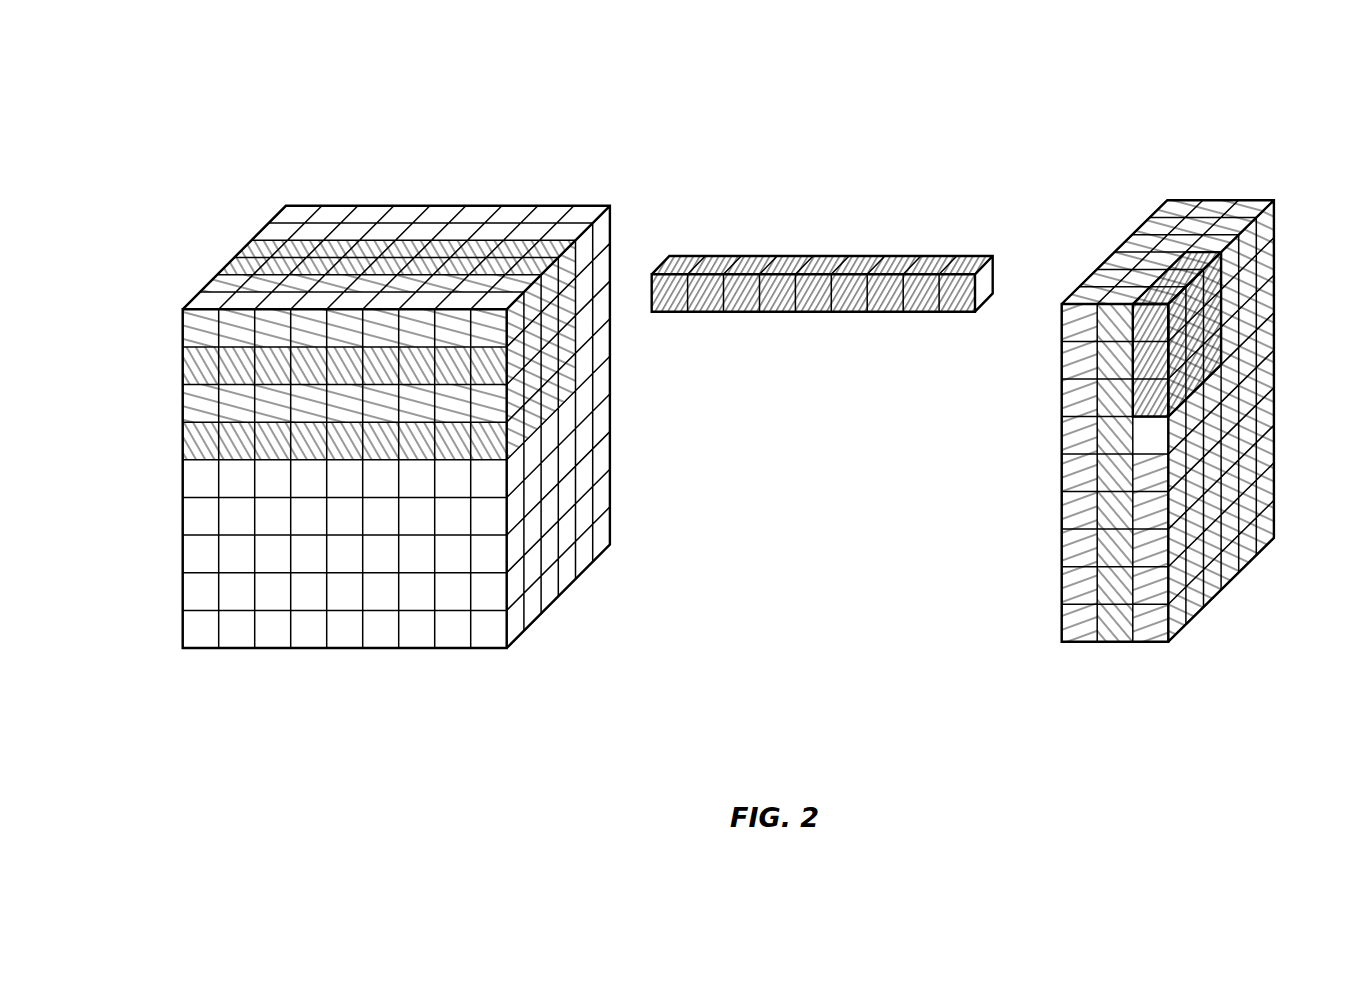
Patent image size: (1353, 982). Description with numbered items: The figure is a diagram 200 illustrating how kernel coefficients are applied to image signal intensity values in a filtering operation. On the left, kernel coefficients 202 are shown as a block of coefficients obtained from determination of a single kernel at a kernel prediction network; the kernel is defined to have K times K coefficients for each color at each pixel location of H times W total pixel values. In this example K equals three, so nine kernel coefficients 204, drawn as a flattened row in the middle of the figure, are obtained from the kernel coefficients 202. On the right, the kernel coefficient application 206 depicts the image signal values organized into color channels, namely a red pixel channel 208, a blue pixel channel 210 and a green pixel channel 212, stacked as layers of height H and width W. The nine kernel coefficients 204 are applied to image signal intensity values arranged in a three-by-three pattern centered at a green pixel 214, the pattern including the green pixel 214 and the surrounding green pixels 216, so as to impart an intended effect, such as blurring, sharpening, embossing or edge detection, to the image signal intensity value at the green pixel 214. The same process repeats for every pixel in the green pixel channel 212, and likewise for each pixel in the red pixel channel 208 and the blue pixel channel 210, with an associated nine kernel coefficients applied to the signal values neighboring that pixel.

The convolution operation 200 is at (908, 79).
The kernel coefficients 202 is at (227, 263).
The nine kernel coefficients 204 is at (915, 313).
The kernel coefficient application 206 is at (1060, 517).
The red pixel channel 208 is at (1078, 621).
The blue pixel channel 210 is at (1113, 622).
The green pixel channel 212 is at (1153, 622).
The green pixel 214 is at (1192, 330).
The green pixels 216 is at (1177, 277).